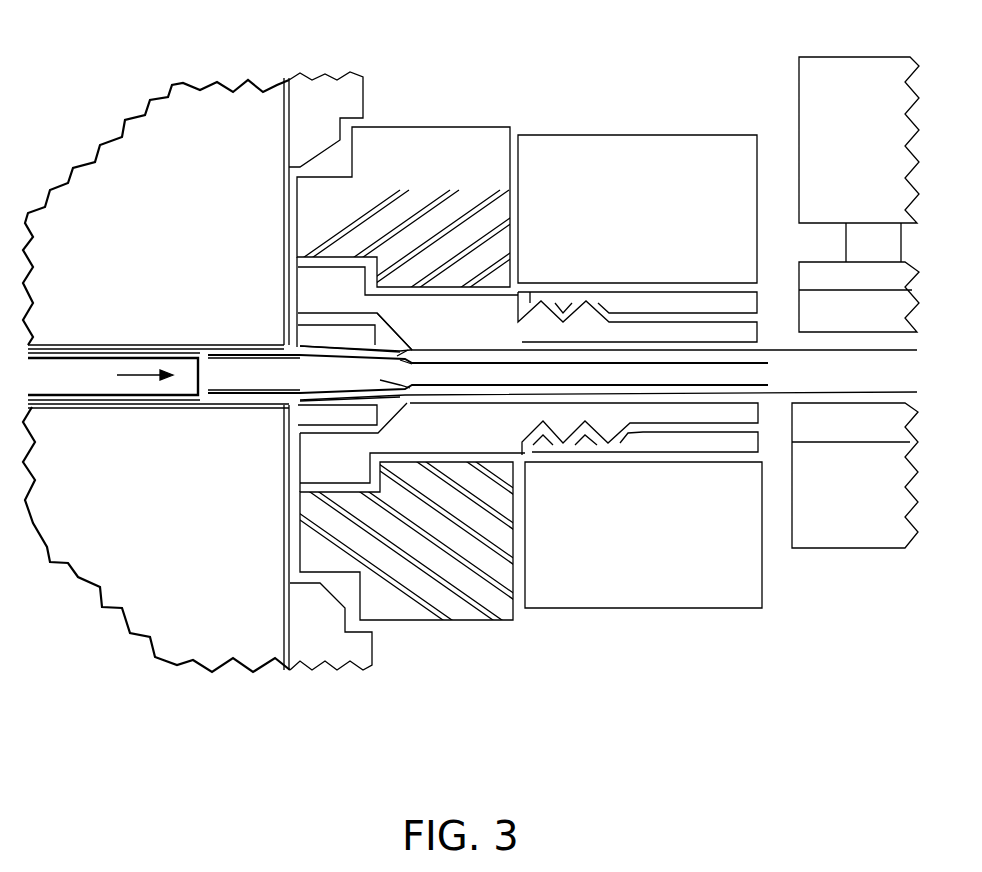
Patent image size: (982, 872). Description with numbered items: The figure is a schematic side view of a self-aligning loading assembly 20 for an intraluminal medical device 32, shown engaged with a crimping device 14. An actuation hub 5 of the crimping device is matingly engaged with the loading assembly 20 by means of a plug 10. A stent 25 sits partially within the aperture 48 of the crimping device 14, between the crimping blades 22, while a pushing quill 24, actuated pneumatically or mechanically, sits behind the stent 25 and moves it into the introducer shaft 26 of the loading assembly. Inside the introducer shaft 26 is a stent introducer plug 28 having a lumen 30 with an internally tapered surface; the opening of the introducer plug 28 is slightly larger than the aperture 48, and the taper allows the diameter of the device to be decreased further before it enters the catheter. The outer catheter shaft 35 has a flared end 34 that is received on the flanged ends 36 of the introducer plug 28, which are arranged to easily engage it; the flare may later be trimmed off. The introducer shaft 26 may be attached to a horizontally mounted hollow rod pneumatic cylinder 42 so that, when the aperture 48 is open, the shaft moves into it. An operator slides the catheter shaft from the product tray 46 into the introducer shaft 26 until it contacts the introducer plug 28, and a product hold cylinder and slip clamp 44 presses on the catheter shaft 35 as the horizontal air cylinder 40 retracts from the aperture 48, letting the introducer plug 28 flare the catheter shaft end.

The crimping device 14 is at (88, 116).
The loading assembly 20 is at (496, 92).
The actuation hub 5 is at (320, 123).
The plug 10 is at (406, 127).
The crimping blades 22 is at (202, 345).
The pushing quill 24 is at (74, 358).
The stent 25 is at (246, 354).
The introducer shaft 26 is at (460, 446).
The stent introducer plug 28 is at (297, 406).
The lumen 30 is at (296, 397).
The intraluminal medical device 32 is at (378, 384).
The flared end 34 is at (410, 352).
The catheter shaft 35 is at (498, 351).
The flanged ends 36 is at (386, 346).
The horizontal air cylinder 40 is at (585, 561).
The hollow rod pneumatic cylinder 42 is at (688, 446).
The product hold cylinder and slip clamp 44 is at (852, 327).
The product tray 46 is at (852, 432).
The aperture 48 is at (141, 399).